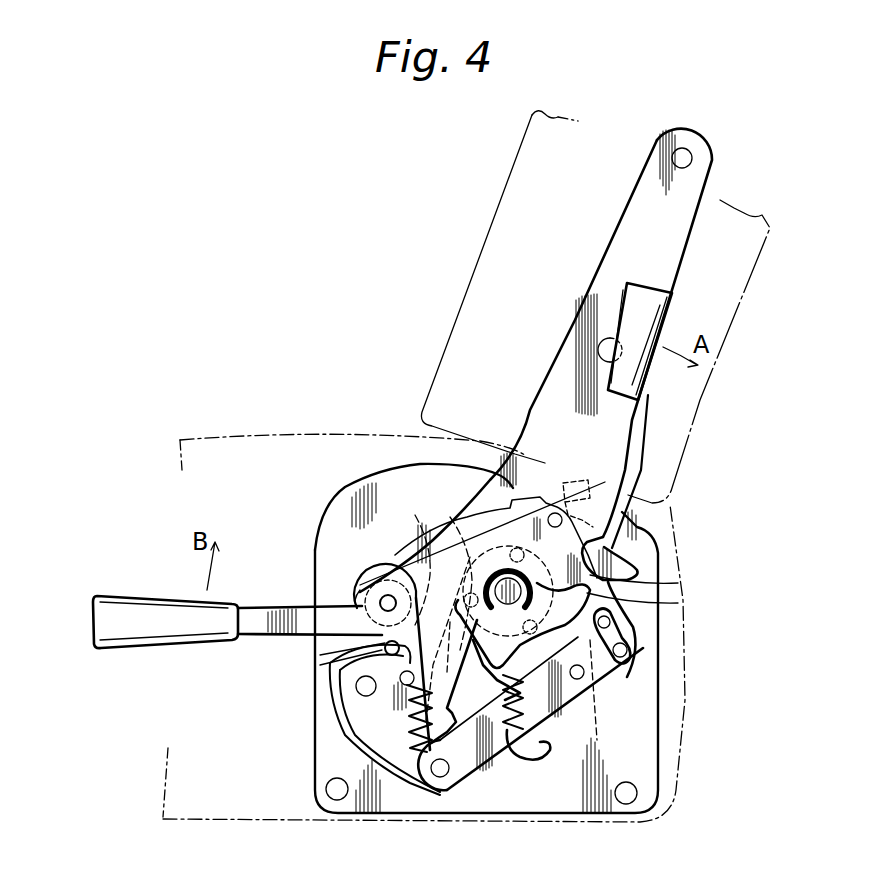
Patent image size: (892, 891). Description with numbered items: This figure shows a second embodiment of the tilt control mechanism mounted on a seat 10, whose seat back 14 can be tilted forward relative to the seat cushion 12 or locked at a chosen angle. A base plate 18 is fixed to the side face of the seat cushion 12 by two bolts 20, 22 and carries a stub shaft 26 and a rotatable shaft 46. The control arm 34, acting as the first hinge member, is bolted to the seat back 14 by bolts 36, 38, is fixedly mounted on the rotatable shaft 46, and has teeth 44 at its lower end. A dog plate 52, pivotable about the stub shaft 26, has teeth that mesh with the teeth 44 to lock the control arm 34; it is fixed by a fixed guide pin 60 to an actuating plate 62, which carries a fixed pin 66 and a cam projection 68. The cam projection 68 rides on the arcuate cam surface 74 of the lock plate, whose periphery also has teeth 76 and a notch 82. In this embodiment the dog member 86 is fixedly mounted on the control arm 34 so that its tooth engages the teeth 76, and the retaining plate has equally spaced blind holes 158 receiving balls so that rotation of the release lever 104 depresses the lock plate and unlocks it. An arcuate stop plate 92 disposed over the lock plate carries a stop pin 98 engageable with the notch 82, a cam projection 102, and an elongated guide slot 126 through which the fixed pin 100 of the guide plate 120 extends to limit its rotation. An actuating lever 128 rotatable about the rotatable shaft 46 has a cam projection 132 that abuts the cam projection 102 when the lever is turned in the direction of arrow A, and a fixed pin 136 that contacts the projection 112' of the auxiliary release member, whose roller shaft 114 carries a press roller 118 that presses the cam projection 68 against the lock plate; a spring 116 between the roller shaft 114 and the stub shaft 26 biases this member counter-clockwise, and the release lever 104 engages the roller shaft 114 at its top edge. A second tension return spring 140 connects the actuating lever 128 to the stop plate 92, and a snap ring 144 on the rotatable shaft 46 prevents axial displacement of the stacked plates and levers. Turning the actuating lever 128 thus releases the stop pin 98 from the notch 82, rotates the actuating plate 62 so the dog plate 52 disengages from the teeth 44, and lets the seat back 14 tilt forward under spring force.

The seat 10 is at (308, 399).
The seat cushion 12 is at (424, 601).
The seat back 14 is at (595, 307).
The base plate 18 is at (403, 501).
The bolt 20 is at (459, 662).
The bolt 22 is at (653, 809).
The stub shaft 26 is at (461, 808).
The control arm 34 is at (536, 360).
The bolt 36 is at (706, 143).
The bolt 38 is at (600, 341).
The teeth 44 is at (329, 652).
The rotatable shaft 46 is at (508, 608).
The dog plate 52 is at (334, 667).
The fixed guide pin 60 is at (356, 720).
The actuating plate 62 is at (351, 721).
The fixed pin 66 is at (403, 740).
The cam projection 68 is at (385, 580).
The arcuate cam surface 74 is at (432, 579).
The teeth 76 is at (503, 420).
The notch 82 is at (615, 762).
The dog member 86 is at (563, 475).
The arcuate stop plate 92 is at (541, 725).
The stop pin 98 is at (603, 705).
The fixed pin 100 is at (630, 678).
The cam projection 102 is at (652, 582).
The release lever 104 is at (176, 638).
The projection 112' is at (679, 555).
The roller shaft 114 is at (338, 586).
The spring 116 is at (458, 711).
The press roller 118 is at (317, 615).
The guide plate 120 is at (660, 636).
The elongated guide slot 126 is at (694, 662).
The actuating lever 128 is at (631, 487).
The cam projection 132 is at (649, 593).
The fixed pin 136 is at (496, 582).
The second tension return spring 140 is at (530, 718).
The snap ring 144 is at (650, 605).
The blind holes 158 is at (476, 611).